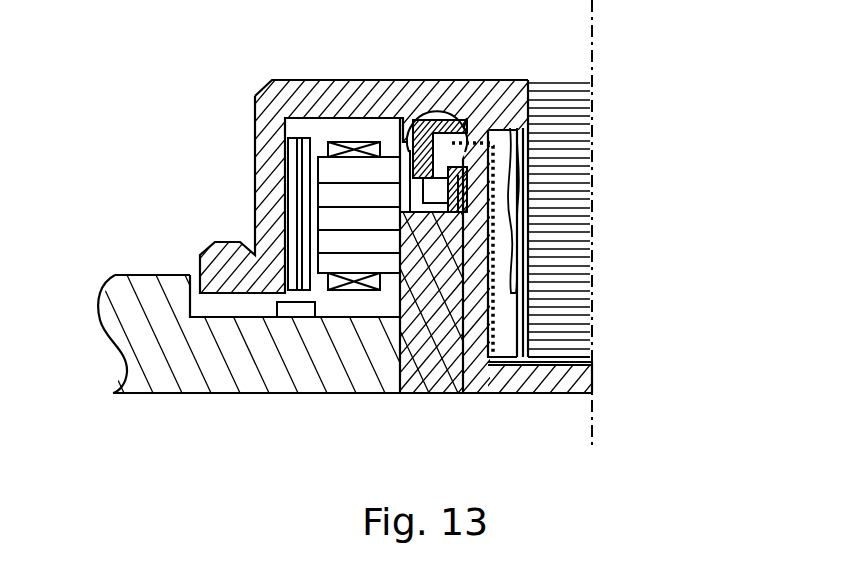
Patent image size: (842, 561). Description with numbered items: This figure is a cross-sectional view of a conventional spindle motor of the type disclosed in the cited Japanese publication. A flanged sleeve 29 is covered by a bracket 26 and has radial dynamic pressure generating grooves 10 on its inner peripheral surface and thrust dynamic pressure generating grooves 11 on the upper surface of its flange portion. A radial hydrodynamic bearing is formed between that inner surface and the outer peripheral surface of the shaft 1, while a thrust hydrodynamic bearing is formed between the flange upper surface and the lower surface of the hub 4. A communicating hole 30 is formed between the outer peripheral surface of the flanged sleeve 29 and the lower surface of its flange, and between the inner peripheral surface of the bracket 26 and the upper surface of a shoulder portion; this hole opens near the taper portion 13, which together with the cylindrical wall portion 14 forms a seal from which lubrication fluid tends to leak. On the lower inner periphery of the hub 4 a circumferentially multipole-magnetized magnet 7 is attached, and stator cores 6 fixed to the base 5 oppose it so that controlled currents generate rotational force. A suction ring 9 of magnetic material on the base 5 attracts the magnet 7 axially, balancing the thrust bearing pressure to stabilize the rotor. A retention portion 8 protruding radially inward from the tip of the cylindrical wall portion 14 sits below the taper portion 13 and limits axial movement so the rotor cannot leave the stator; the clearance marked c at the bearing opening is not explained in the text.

The shaft 1 is at (572, 147).
The hub 4 is at (268, 157).
The base 5 is at (160, 367).
The stator cores 6 is at (367, 170).
The magnet 7 is at (296, 212).
The retention portion 8 is at (455, 172).
The suction ring 9 is at (285, 320).
The radial dynamic pressure generating grooves 10 is at (514, 297).
The thrust dynamic pressure generating grooves 11 is at (479, 135).
The taper portion 13 is at (462, 140).
The cylindrical wall portion 14 is at (402, 152).
The bracket 26 is at (492, 175).
The flanged sleeve 29 is at (512, 157).
The communicating hole 30 is at (496, 365).
The clearance c is at (440, 118).